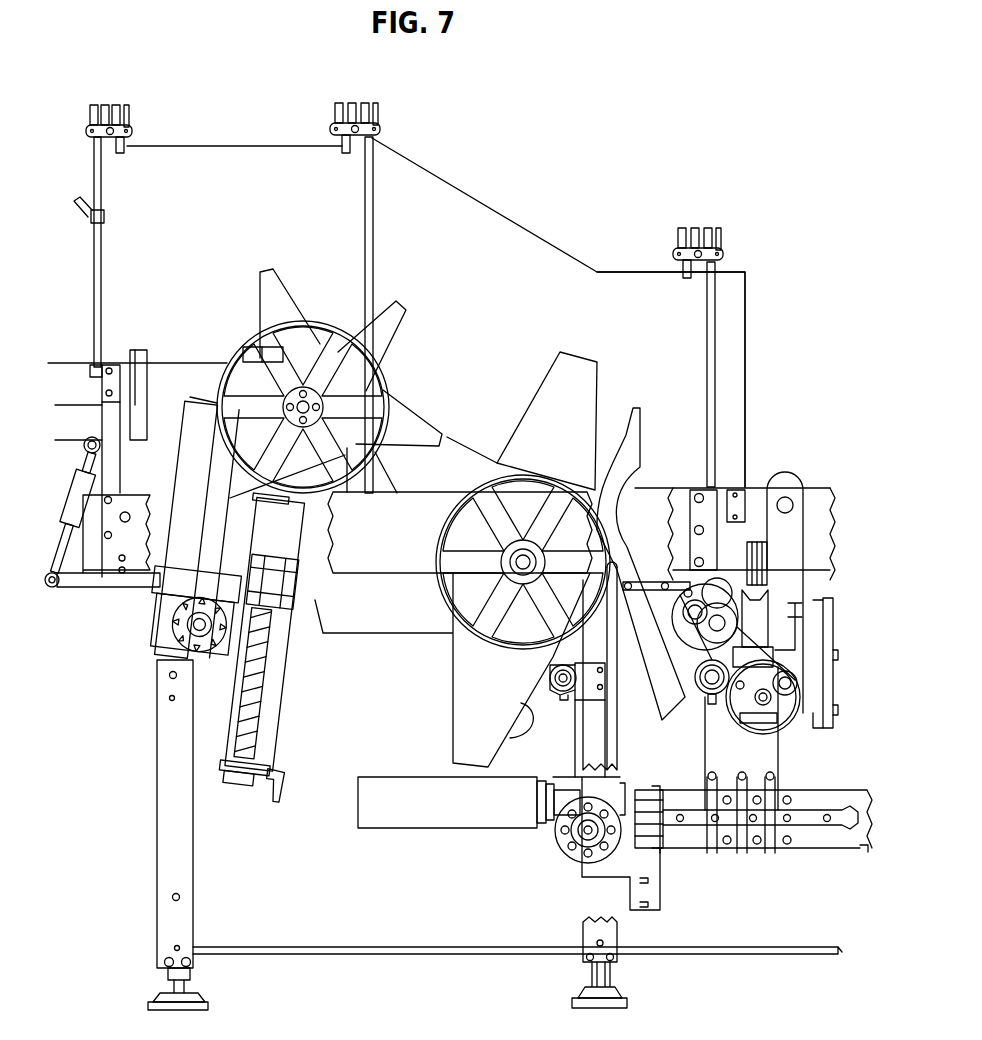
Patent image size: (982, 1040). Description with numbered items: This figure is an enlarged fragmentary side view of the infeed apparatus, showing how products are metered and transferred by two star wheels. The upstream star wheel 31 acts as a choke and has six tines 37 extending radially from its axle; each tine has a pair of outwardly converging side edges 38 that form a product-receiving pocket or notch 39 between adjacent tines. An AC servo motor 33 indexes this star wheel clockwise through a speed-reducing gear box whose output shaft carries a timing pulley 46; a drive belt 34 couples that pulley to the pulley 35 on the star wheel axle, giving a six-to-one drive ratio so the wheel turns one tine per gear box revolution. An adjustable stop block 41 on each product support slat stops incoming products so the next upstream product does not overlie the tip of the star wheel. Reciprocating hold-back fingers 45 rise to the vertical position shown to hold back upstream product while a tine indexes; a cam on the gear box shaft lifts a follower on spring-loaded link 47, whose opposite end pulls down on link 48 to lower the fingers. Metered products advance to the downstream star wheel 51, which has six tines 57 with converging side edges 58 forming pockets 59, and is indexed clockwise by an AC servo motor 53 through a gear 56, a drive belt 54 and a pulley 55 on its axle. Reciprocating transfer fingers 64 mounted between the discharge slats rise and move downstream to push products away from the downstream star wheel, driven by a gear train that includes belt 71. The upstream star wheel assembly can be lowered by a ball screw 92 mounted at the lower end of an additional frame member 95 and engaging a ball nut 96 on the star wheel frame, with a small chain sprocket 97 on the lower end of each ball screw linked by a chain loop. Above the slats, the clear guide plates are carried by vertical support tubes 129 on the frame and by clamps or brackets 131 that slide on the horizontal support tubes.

The clamps or brackets 131 is at (87, 126).
The vertical support tubes 129 is at (93, 165).
The upstream star wheel 31 is at (259, 271).
The side edges 38 is at (259, 283).
The product-receiving pocket or notch 39 is at (398, 298).
The tines 37 is at (387, 377).
The pulley 35 is at (400, 380).
The adjustable stop block 41 is at (243, 343).
The product-receiving pocket or notch 59 is at (493, 440).
The downstream star wheel 51 is at (568, 357).
The reciprocating transfer fingers 64 is at (641, 447).
The reciprocating hold-back fingers 45 is at (140, 420).
The AC servo motor 33 is at (183, 484).
The link 48 is at (46, 576).
The link 47 is at (162, 578).
The drive belt 34 is at (160, 588).
The timing pulley 46 is at (150, 645).
The ball nut 96 is at (285, 640).
The pulley 55 is at (450, 625).
The side edges 58 is at (522, 707).
The tines 57 is at (463, 732).
The additional frame member 95 is at (233, 682).
The ball screw 92 is at (243, 728).
The belt 71 is at (220, 765).
The chain sprocket 97 is at (252, 784).
The drive belt 54 is at (575, 742).
The AC servo motor 53 is at (452, 828).
The gear 56 is at (572, 840).